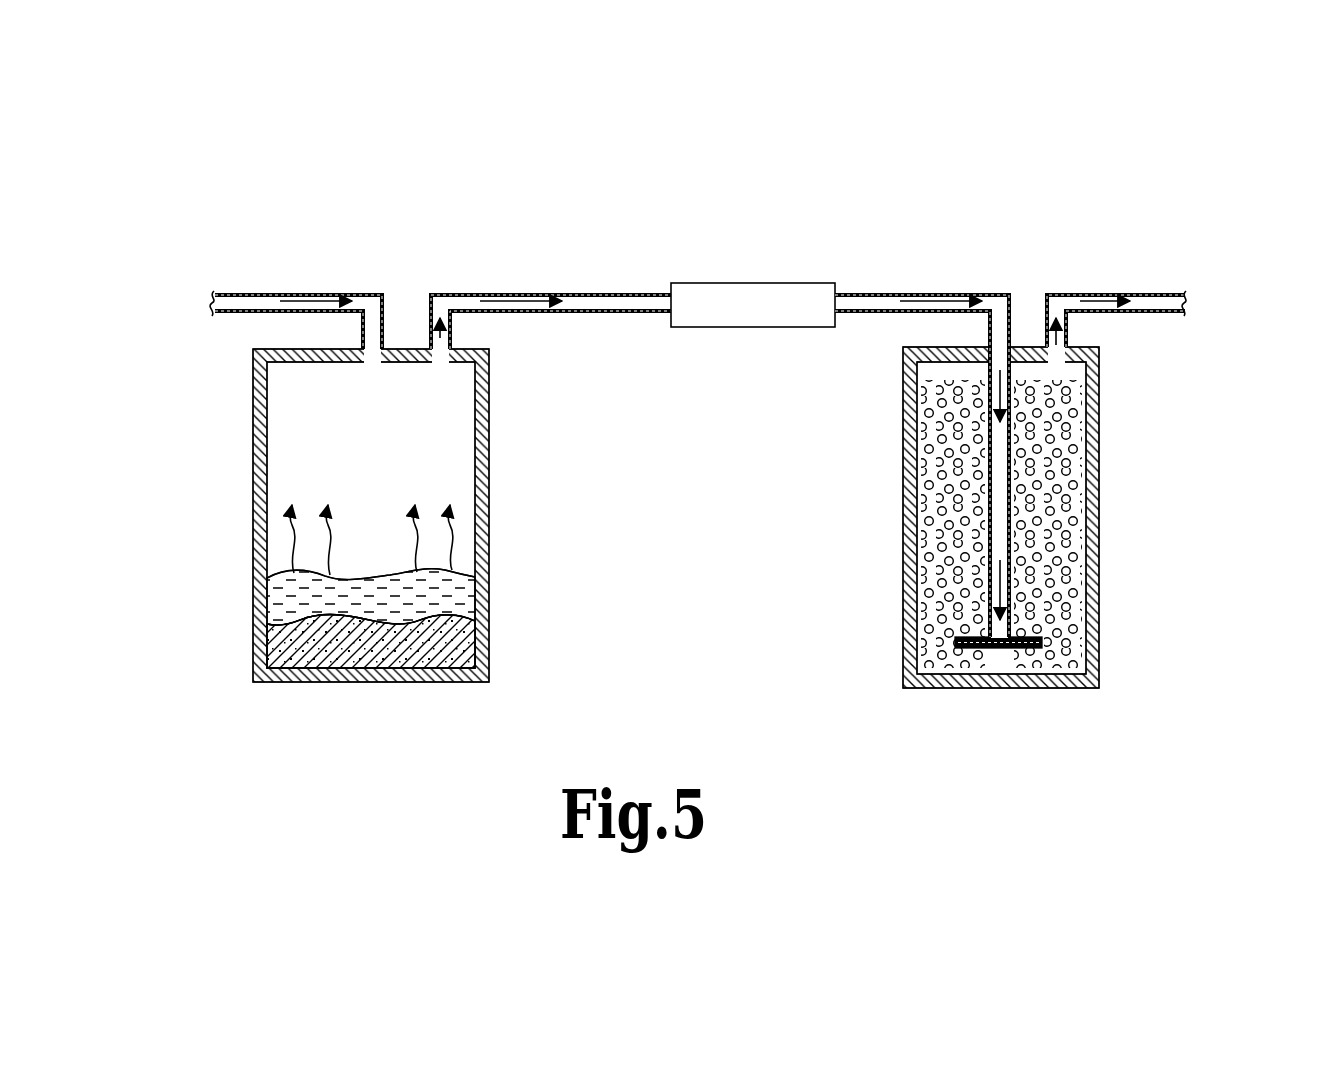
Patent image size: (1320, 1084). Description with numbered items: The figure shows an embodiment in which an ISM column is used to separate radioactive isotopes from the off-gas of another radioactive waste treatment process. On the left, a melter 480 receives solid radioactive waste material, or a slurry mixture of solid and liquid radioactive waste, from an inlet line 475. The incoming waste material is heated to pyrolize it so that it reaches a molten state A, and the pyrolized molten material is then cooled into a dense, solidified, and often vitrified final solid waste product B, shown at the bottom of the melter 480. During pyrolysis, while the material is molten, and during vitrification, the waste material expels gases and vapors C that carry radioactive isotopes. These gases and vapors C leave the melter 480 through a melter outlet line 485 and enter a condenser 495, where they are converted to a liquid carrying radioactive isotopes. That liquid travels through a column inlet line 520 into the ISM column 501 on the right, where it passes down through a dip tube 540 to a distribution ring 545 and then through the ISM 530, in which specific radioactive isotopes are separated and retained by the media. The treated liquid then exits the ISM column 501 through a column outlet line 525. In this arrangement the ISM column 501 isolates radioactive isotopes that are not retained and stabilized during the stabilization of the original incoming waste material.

The inlet line 475 is at (313, 293).
The melter 480 is at (367, 575).
The melter outlet line 485 is at (529, 293).
The condenser 495 is at (738, 283).
The column inlet line 520 is at (951, 293).
The column outlet line 525 is at (1131, 293).
The ISM 530 is at (1058, 548).
The dip tube 540 is at (1017, 433).
The distribution ring 545 is at (975, 650).
The ISM column 501 is at (702, 472).
The molten state A is at (465, 594).
The final solid waste product B is at (415, 668).
The gases and vapors C is at (436, 492).